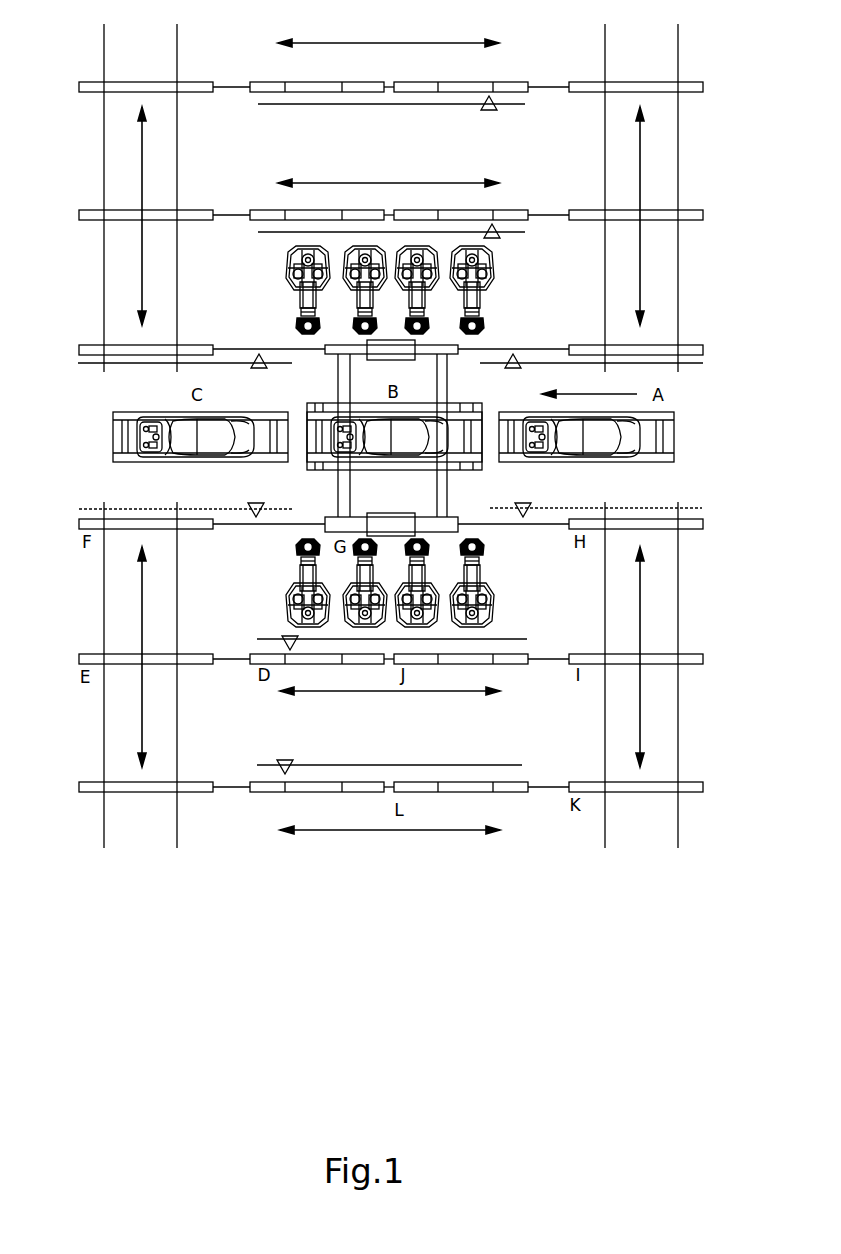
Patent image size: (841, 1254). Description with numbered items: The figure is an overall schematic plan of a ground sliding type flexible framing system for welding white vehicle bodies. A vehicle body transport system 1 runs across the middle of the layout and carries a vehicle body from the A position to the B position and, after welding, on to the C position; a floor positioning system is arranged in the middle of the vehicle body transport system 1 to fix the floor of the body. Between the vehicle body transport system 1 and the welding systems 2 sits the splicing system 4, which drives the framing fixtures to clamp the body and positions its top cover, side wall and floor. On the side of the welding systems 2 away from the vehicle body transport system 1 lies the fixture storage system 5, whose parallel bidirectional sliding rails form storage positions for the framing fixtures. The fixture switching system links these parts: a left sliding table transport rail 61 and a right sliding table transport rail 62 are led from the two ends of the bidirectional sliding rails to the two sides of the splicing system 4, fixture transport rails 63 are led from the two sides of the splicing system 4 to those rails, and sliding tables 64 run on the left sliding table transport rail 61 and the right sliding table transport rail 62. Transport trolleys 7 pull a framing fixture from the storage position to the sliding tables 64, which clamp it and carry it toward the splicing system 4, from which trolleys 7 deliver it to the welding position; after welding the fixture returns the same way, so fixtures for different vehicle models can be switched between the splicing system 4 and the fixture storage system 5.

The vehicle body transport system 1 is at (677, 430).
The welding systems 2 is at (494, 586).
The splicing system 4 is at (345, 494).
The fixture storage system 5 is at (526, 641).
The transport trolleys 7 is at (256, 503).
The left sliding table transport rail 61 is at (104, 592).
The right sliding table transport rail 62 is at (680, 592).
The fixture transport rails 63 is at (277, 526).
The sliding tables 64 is at (79, 524).